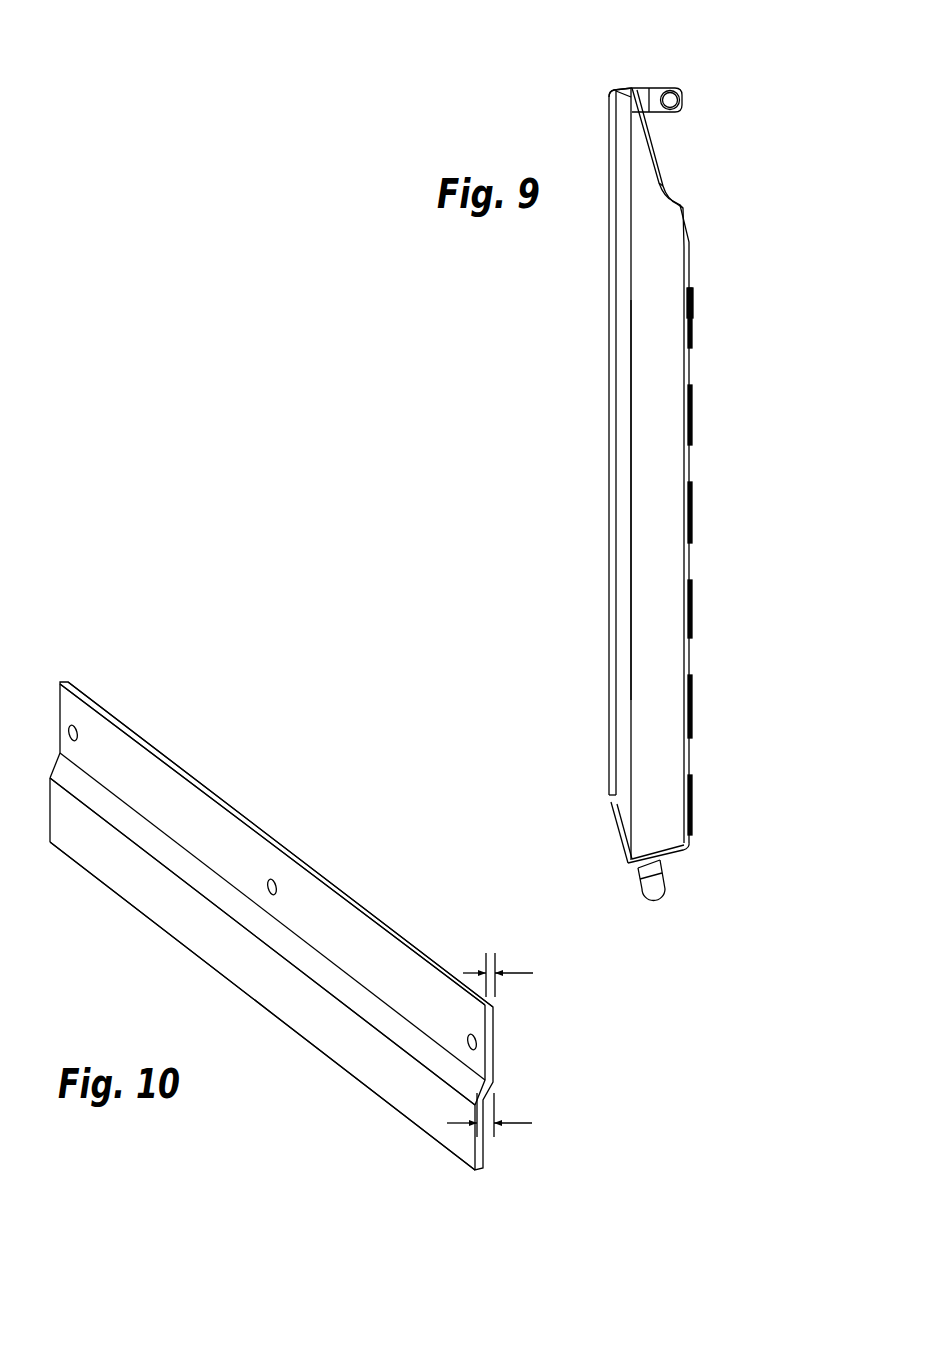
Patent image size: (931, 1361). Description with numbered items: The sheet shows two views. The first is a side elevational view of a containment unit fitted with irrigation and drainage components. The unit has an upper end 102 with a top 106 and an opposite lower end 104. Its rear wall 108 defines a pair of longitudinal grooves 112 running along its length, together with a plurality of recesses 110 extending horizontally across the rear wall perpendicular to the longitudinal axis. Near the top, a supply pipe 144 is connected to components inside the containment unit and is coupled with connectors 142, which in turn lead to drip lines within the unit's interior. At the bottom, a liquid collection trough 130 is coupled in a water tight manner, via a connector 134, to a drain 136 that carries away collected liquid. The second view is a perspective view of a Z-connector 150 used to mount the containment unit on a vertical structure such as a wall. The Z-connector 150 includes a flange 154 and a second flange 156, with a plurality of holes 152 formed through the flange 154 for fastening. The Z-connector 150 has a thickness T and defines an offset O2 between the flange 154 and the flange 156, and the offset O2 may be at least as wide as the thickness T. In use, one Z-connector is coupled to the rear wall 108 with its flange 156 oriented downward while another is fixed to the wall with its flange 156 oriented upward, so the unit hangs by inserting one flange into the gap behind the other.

In FIG. 9, the upper end 102 is at (701, 69).
In FIG. 9, the lower end 104 is at (744, 899).
In FIG. 9, the top 106 is at (621, 92).
In FIG. 9, the rear wall 108 is at (691, 404).
In FIG. 9, the recesses 110 is at (691, 337).
In FIG. 9, the grooves 112 is at (662, 610).
In FIG. 9, the liquid collection trough 130 is at (662, 798).
In FIG. 9, the connector 134 is at (630, 877).
In FIG. 9, the drain 136 is at (640, 893).
In FIG. 9, the connectors 142 is at (643, 88).
In FIG. 9, the supply pipe 144 is at (681, 106).
In FIG. 9, the Z-connector 150 is at (693, 305).
In FIG. 10, the Z-connector 150 is at (204, 786).
In FIG. 10, the holes 152 is at (77, 730).
In FIG. 10, the flange 154 is at (368, 947).
In FIG. 10, the flange 156 is at (326, 1022).
In FIG. 10, the thickness T is at (495, 977).
In FIG. 10, the offset O2 is at (494, 1125).